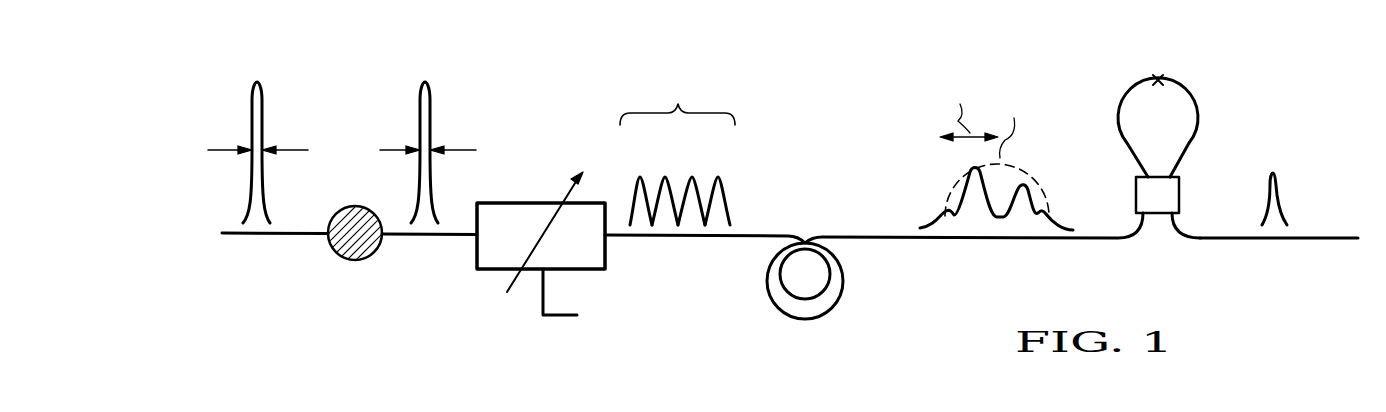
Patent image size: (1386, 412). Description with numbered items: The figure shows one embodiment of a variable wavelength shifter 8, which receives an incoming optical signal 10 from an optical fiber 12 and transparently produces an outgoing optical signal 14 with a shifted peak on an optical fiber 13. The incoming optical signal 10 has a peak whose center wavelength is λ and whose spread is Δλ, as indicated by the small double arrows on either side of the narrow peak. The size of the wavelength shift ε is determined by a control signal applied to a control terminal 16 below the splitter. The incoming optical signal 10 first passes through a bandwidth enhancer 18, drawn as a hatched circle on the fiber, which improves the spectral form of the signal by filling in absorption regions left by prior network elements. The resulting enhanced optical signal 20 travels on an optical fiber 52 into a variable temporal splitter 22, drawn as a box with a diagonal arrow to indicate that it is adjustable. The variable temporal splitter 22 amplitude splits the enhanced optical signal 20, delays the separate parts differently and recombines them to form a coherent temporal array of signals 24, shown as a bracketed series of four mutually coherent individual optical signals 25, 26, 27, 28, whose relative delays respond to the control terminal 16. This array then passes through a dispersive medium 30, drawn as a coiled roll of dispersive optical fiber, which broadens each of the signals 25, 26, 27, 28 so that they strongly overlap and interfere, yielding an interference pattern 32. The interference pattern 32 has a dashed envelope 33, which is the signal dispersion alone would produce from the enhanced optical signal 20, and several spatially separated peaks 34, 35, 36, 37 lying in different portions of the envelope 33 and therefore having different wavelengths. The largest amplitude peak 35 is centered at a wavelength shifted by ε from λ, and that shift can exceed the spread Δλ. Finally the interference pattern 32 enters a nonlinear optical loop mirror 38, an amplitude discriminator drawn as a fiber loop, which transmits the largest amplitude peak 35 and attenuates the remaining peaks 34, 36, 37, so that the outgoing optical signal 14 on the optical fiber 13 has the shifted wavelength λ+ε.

The variable wavelength shifter 8 is at (375, 341).
The incoming optical signal 10 is at (254, 80).
The optical fiber 12 is at (268, 238).
The optical fiber 13 is at (1265, 240).
The outgoing optical signal 14 is at (693, 240).
The control terminal 16 is at (569, 314).
The bandwidth enhancer 18 is at (363, 260).
The enhanced optical signal 20 is at (423, 80).
The variable temporal splitter 22 is at (537, 202).
The coherent temporal array of signals 24 is at (677, 100).
The individual optical signal 25 is at (633, 187).
The individual optical signal 26 is at (672, 178).
The individual optical signal 27 is at (694, 178).
The individual optical signal 28 is at (720, 184).
The dispersive medium 30 is at (842, 280).
The interference pattern 32 is at (917, 109).
The envelope 33 is at (1023, 167).
The peak 34 is at (946, 214).
The largest amplitude peak 35 is at (972, 167).
The peak 36 is at (1028, 185).
The peak 37 is at (1045, 206).
The nonlinear optical loop mirror 38 is at (1220, 103).
The optical fiber 52 is at (440, 240).